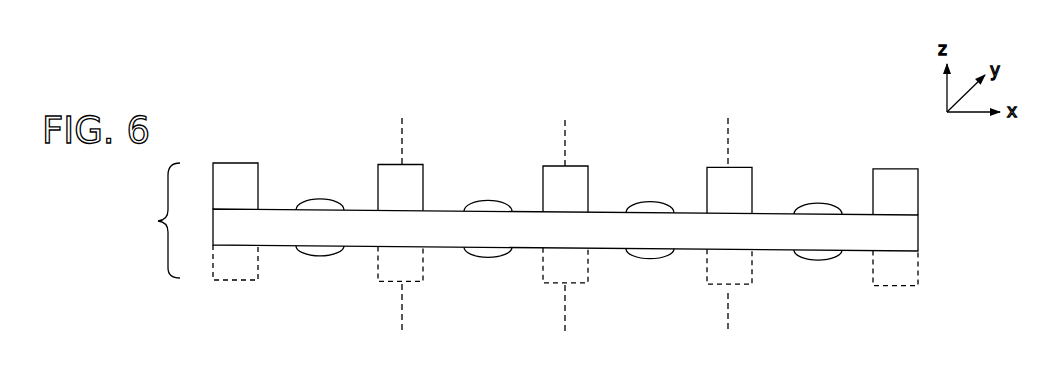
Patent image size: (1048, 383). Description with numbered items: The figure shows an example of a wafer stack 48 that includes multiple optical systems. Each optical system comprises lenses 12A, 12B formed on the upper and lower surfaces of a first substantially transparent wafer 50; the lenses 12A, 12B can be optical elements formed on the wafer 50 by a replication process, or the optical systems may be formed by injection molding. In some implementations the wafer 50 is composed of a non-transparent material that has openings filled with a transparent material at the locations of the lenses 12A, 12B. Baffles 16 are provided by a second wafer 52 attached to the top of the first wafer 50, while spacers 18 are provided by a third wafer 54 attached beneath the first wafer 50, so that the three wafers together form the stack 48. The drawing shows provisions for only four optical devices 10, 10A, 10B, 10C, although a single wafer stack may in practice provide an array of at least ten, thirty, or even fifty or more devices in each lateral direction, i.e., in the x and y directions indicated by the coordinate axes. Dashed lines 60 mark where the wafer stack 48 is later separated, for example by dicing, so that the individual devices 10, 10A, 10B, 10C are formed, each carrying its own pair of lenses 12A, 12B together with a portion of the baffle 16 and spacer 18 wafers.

The optical device 10 is at (315, 147).
The optical device 10A is at (497, 139).
The optical device 10B is at (664, 144).
The optical device 10C is at (895, 143).
The lens 12A is at (320, 200).
The lens 12B is at (313, 256).
The baffle 16 is at (228, 162).
The spacer 18 is at (242, 283).
The wafer stack 48 is at (155, 220).
The first substantially transparent wafer 50 is at (921, 233).
The second wafer 52 is at (921, 187).
The third wafer 54 is at (921, 268).
The separation lines 60 is at (404, 132).